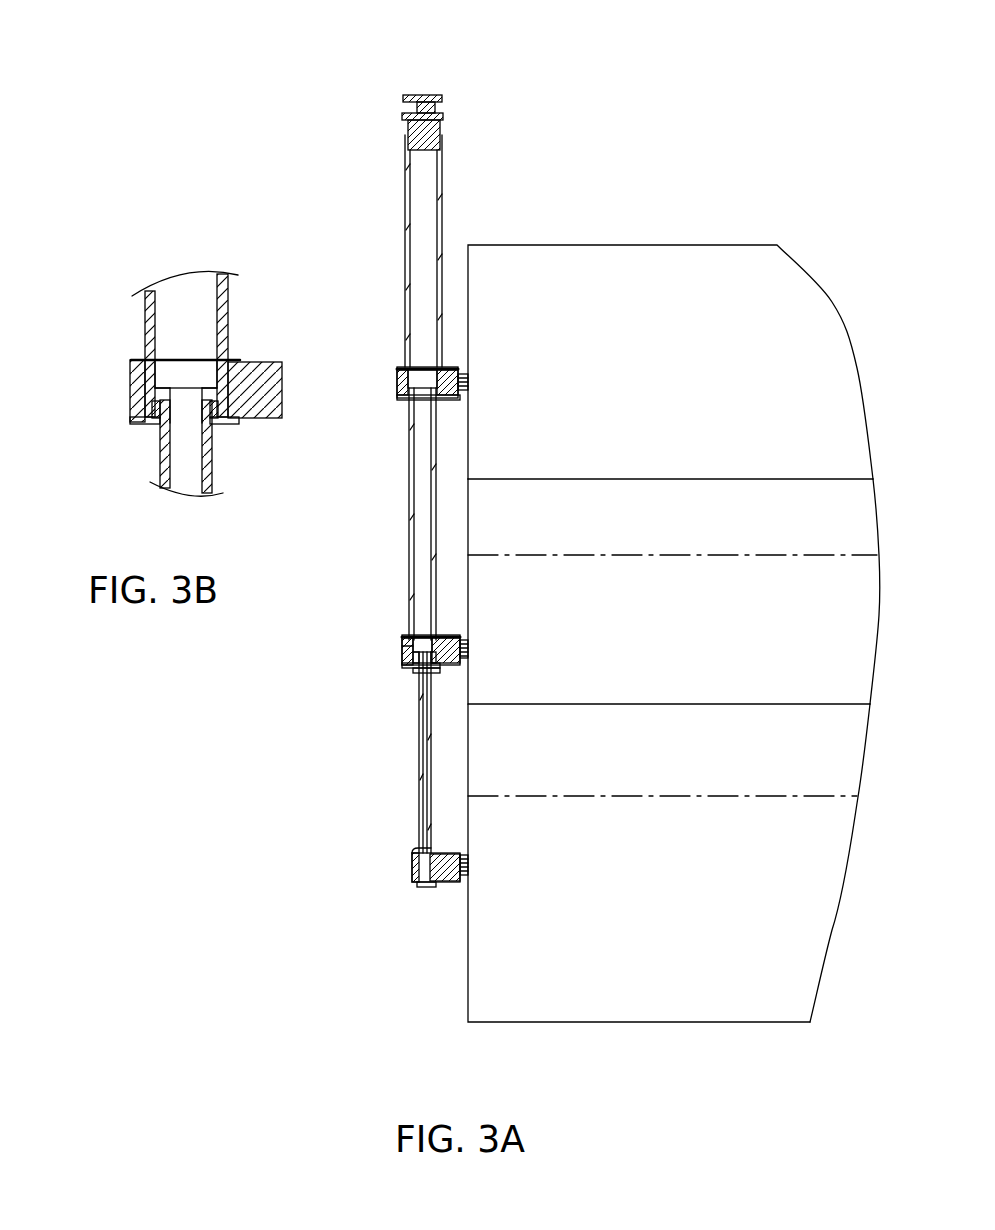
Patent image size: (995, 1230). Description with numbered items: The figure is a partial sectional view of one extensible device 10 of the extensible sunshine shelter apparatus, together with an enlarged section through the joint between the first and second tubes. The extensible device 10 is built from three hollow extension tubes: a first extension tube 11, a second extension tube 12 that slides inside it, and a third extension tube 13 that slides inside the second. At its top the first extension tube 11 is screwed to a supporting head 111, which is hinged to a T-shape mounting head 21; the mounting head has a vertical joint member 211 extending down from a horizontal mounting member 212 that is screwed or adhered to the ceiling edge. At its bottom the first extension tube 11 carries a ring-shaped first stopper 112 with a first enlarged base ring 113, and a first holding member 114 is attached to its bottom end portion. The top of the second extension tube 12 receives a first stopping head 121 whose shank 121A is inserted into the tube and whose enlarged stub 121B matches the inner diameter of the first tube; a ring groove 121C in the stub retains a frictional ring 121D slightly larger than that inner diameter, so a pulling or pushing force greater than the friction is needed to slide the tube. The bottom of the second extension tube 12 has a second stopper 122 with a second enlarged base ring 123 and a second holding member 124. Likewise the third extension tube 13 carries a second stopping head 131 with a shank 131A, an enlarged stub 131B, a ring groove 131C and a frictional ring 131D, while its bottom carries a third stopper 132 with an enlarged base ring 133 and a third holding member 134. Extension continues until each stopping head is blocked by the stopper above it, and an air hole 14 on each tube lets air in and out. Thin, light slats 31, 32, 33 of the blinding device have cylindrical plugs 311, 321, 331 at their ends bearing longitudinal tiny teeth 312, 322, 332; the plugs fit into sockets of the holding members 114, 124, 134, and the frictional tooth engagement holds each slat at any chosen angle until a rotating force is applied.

In FIG. 3A, the extensible device 10 is at (372, 252).
In FIG. 3A, the first extension tube 11 is at (405, 205).
In FIG. 3B, the first extension tube 11 is at (147, 315).
In FIG. 3A, the supporting head 111 is at (441, 138).
In FIG. 3B, the first stopper 112 is at (155, 412).
In FIG. 3B, the first enlarged base ring 113 is at (138, 425).
In FIG. 3A, the first holding member 114 is at (400, 370).
In FIG. 3A, the second extension tube 12 is at (409, 450).
In FIG. 3B, the second extension tube 12 is at (163, 467).
In FIG. 3B, the first stopping head 121 is at (239, 369).
In FIG. 3B, the shank 121A is at (185, 410).
In FIG. 3B, the enlarged stub 121B is at (167, 350).
In FIG. 3B, the ring groove 121C is at (203, 351).
In FIG. 3B, the frictional ring 121D is at (202, 375).
In FIG. 3A, the second stopper 122 is at (413, 655).
In FIG. 3A, the second enlarged base ring 123 is at (410, 666).
In FIG. 3A, the second holding member 124 is at (410, 646).
In FIG. 3A, the third extension tube 13 is at (421, 675).
In FIG. 3A, the second stopping head 131 is at (392, 622).
In FIG. 3A, the shank 131A is at (412, 670).
In FIG. 3A, the enlarged stub 131B is at (434, 637).
In FIG. 3A, the ring groove 131C is at (410, 636).
In FIG. 3A, the frictional ring 131D is at (408, 638).
In FIG. 3A, the third stopper 132 is at (413, 867).
In FIG. 3A, the enlarged base ring 133 is at (418, 884).
In FIG. 3A, the third holding member 134 is at (415, 862).
In FIG. 3A, the air hole 14 is at (440, 164).
In FIG. 3A, the T-shape mounting head 21 is at (471, 74).
In FIG. 3A, the vertical joint member 211 is at (438, 110).
In FIG. 3A, the horizontal mounting member 212 is at (410, 94).
In FIG. 3A, the slat 31 is at (797, 425).
In FIG. 3A, the cylindrical plug 311 is at (458, 376).
In FIG. 3A, the longitudinal tiny teeth 312 is at (468, 378).
In FIG. 3A, the slat 32 is at (800, 642).
In FIG. 3A, the cylindrical plug 321 is at (463, 642).
In FIG. 3A, the longitudinal tiny teeth 322 is at (468, 650).
In FIG. 3A, the slat 33 is at (760, 962).
In FIG. 3A, the cylindrical plug 331 is at (467, 854).
In FIG. 3A, the longitudinal tiny teeth 332 is at (468, 866).